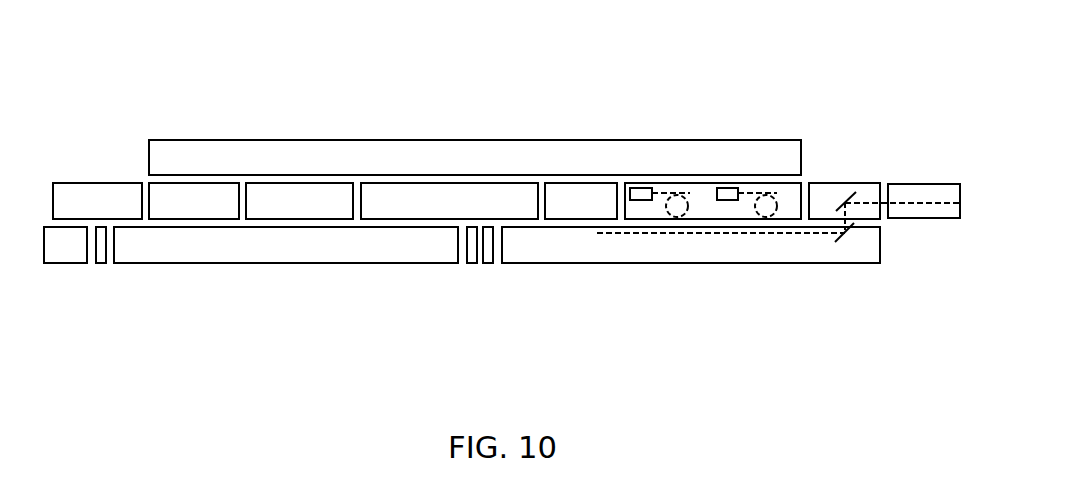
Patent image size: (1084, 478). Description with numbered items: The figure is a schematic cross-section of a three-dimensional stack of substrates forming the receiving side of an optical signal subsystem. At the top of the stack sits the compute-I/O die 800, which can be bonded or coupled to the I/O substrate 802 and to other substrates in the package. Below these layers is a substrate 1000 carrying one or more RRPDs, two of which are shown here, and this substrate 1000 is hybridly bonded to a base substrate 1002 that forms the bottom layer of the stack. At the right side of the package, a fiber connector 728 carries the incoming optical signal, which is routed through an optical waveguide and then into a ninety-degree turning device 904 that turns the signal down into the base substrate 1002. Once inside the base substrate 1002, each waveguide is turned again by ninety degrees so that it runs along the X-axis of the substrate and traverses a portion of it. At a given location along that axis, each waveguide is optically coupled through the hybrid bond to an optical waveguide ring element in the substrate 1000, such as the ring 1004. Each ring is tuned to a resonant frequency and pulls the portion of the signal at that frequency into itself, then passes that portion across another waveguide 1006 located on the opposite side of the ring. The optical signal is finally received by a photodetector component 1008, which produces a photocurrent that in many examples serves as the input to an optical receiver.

The compute-I/O die 800 is at (475, 157).
The I/O substrate 802 is at (449, 201).
The 90-degree turning device 904 is at (840, 184).
The fiber connector 728 is at (920, 218).
The substrate 1000 is at (757, 183).
The base substrate 1002 is at (603, 265).
The ring 1004 is at (688, 216).
The waveguide 1006 is at (670, 192).
The photodetector component 1008 is at (643, 183).